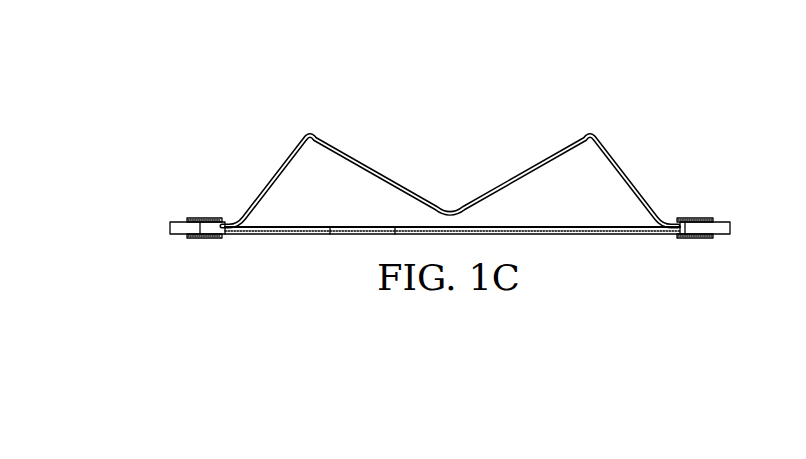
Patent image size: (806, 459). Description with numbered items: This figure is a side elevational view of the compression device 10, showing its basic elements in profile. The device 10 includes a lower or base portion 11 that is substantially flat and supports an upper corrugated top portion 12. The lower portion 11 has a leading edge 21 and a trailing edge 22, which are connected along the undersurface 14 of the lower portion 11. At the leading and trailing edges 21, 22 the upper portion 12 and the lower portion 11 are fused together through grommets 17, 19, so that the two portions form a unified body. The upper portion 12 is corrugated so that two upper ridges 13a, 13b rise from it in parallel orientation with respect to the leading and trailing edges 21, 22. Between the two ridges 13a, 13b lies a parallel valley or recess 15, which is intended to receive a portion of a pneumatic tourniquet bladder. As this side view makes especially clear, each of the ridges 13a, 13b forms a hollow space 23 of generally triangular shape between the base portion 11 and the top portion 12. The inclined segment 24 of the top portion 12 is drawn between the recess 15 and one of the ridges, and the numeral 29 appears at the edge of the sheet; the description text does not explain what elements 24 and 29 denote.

The compression device 10 is at (226, 68).
The lower or base portion 11 is at (612, 245).
The upper corrugated top portion 12 is at (371, 159).
The upper ridge 13a is at (308, 129).
The upper ridge 13b is at (591, 129).
The undersurface 14 is at (303, 237).
The valley or recess 15 is at (450, 120).
The grommet 17 is at (694, 238).
The grommet 19 is at (203, 239).
The leading edge 21 is at (170, 223).
The trailing edge 22 is at (730, 223).
The hollow space 23 is at (280, 190).
The inclined segment 24 is at (530, 168).
The adjacent component 29 is at (797, 51).